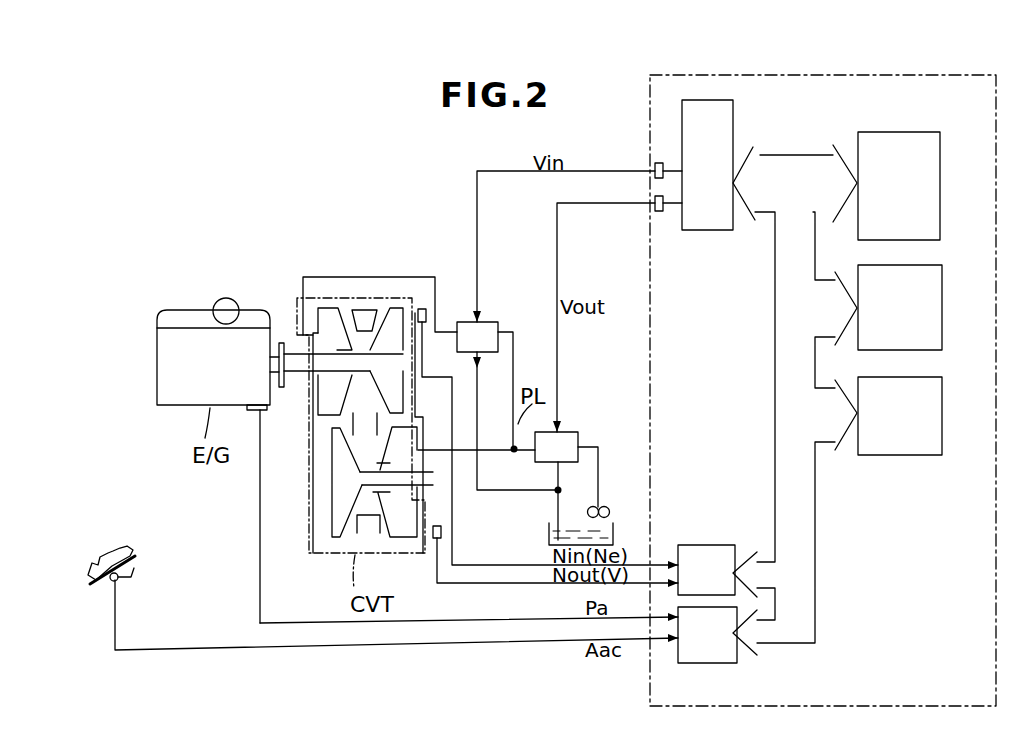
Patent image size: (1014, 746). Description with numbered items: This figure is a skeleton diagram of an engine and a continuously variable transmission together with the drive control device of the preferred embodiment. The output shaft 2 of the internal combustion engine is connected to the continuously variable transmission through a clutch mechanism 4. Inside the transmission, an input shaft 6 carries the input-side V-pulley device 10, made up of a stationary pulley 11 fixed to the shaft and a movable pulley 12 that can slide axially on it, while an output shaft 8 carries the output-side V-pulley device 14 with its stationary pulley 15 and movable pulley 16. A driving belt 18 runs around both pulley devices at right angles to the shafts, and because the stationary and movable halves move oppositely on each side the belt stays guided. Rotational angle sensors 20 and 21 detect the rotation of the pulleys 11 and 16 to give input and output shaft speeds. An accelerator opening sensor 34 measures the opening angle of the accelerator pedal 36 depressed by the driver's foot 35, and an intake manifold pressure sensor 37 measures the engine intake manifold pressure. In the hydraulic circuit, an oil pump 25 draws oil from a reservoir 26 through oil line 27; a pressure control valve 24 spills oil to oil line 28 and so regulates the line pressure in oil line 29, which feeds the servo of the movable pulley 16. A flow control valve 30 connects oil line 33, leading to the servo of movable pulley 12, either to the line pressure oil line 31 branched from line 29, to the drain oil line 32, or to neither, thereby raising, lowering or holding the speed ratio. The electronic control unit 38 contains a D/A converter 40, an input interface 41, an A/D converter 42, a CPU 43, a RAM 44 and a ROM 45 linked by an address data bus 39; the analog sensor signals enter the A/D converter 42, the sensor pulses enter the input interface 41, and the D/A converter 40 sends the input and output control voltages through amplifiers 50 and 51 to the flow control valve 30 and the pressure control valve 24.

The output shaft 2 is at (279, 343).
The clutch mechanism 4 is at (283, 388).
The input shaft 6 is at (298, 353).
The output shaft 8 is at (430, 480).
The V-pulley device 10 is at (370, 402).
The stationary pulley 11 is at (397, 317).
The movable pulley 12 is at (330, 317).
The V-pulley device 14 is at (367, 521).
The stationary pulley 15 is at (328, 535).
The movable pulley 16 is at (404, 528).
The driving belt 18 is at (366, 306).
The rotational angle sensor 20 is at (425, 323).
The rotational angle sensor 21 is at (440, 539).
The pressure control valve 24 is at (567, 442).
The oil pump 25 is at (604, 506).
The reservoir 26 is at (614, 535).
The oil line 27 is at (602, 468).
The oil line 28 is at (556, 475).
The oil line 29 is at (490, 448).
The flow control valve 30 is at (487, 330).
The line pressure oil line 31 is at (515, 372).
The drain oil line 32 is at (495, 388).
The oil line 33 is at (388, 277).
The accelerator opening sensor 34 is at (110, 581).
The driver's foot 35 is at (104, 560).
The accelerator pedal 36 is at (135, 557).
The intake manifold pressure sensor 37 is at (267, 412).
The electronic control unit 38 is at (944, 72).
The address data bus 39 is at (788, 313).
The D/A converter 40 is at (712, 222).
The input interface 41 is at (703, 553).
The A/D converter 42 is at (708, 655).
The CPU 43 is at (925, 158).
The RAM 44 is at (925, 283).
The ROM 45 is at (925, 395).
The amplifier 50 is at (655, 172).
The amplifier 51 is at (659, 212).